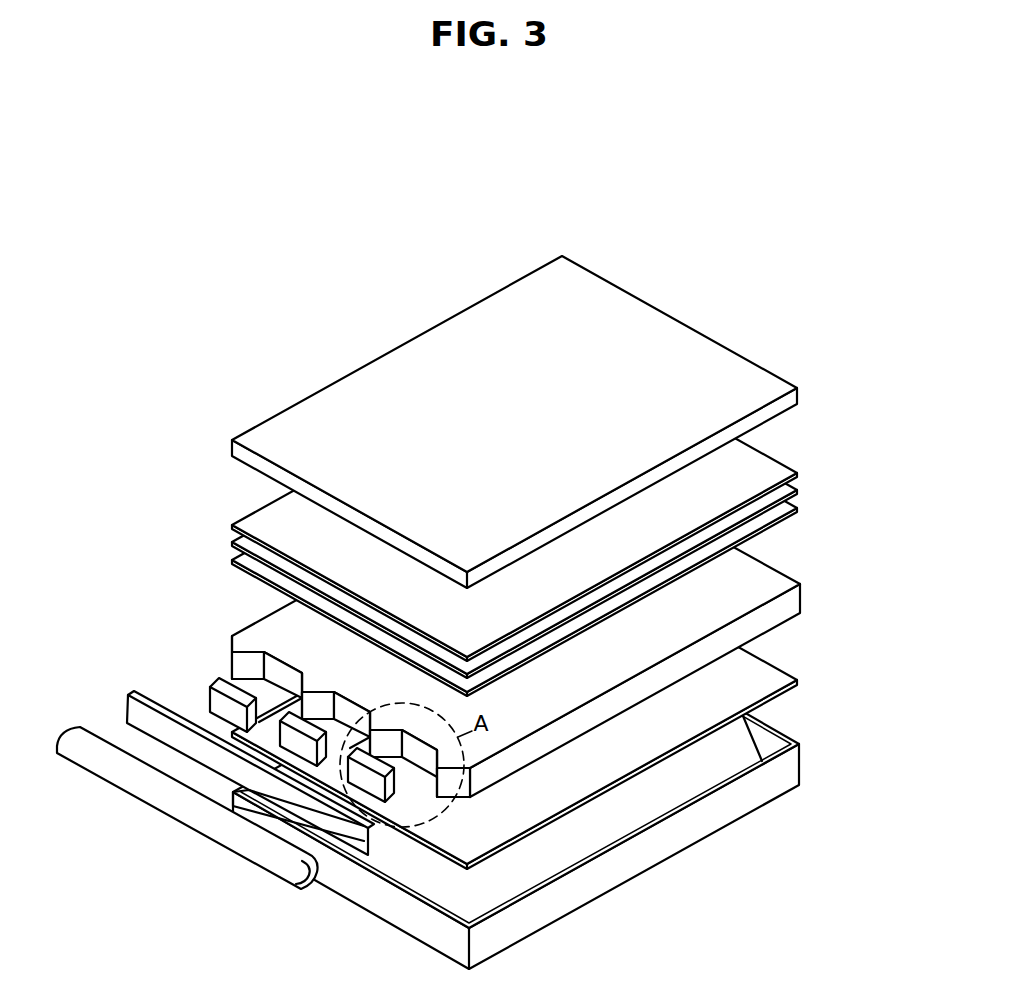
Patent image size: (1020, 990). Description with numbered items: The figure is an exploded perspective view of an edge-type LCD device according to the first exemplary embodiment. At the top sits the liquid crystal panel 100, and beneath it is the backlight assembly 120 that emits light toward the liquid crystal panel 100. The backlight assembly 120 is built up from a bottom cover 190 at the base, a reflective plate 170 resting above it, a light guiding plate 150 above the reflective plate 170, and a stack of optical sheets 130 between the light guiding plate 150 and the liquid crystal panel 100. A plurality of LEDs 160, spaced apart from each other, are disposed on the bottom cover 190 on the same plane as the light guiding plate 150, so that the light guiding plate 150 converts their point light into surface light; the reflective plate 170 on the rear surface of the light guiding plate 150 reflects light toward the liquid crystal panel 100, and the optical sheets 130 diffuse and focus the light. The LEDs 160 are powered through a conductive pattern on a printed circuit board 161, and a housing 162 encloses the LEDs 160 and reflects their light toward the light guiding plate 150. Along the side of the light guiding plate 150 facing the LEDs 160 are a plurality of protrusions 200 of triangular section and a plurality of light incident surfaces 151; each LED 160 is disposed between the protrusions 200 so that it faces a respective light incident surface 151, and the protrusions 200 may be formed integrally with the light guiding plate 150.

The liquid crystal panel 100 is at (799, 392).
The backlight assembly 120 is at (490, 655).
The optical sheets 130 is at (544, 518).
The light guiding plate 150 is at (801, 588).
The light incident surfaces 151 is at (283, 678).
The LEDs 160 is at (210, 694).
The printed circuit board 161 is at (133, 693).
The housing 162 is at (78, 737).
The reflective plate 170 is at (801, 680).
The bottom cover 190 is at (800, 758).
The protrusions 200 is at (515, 624).